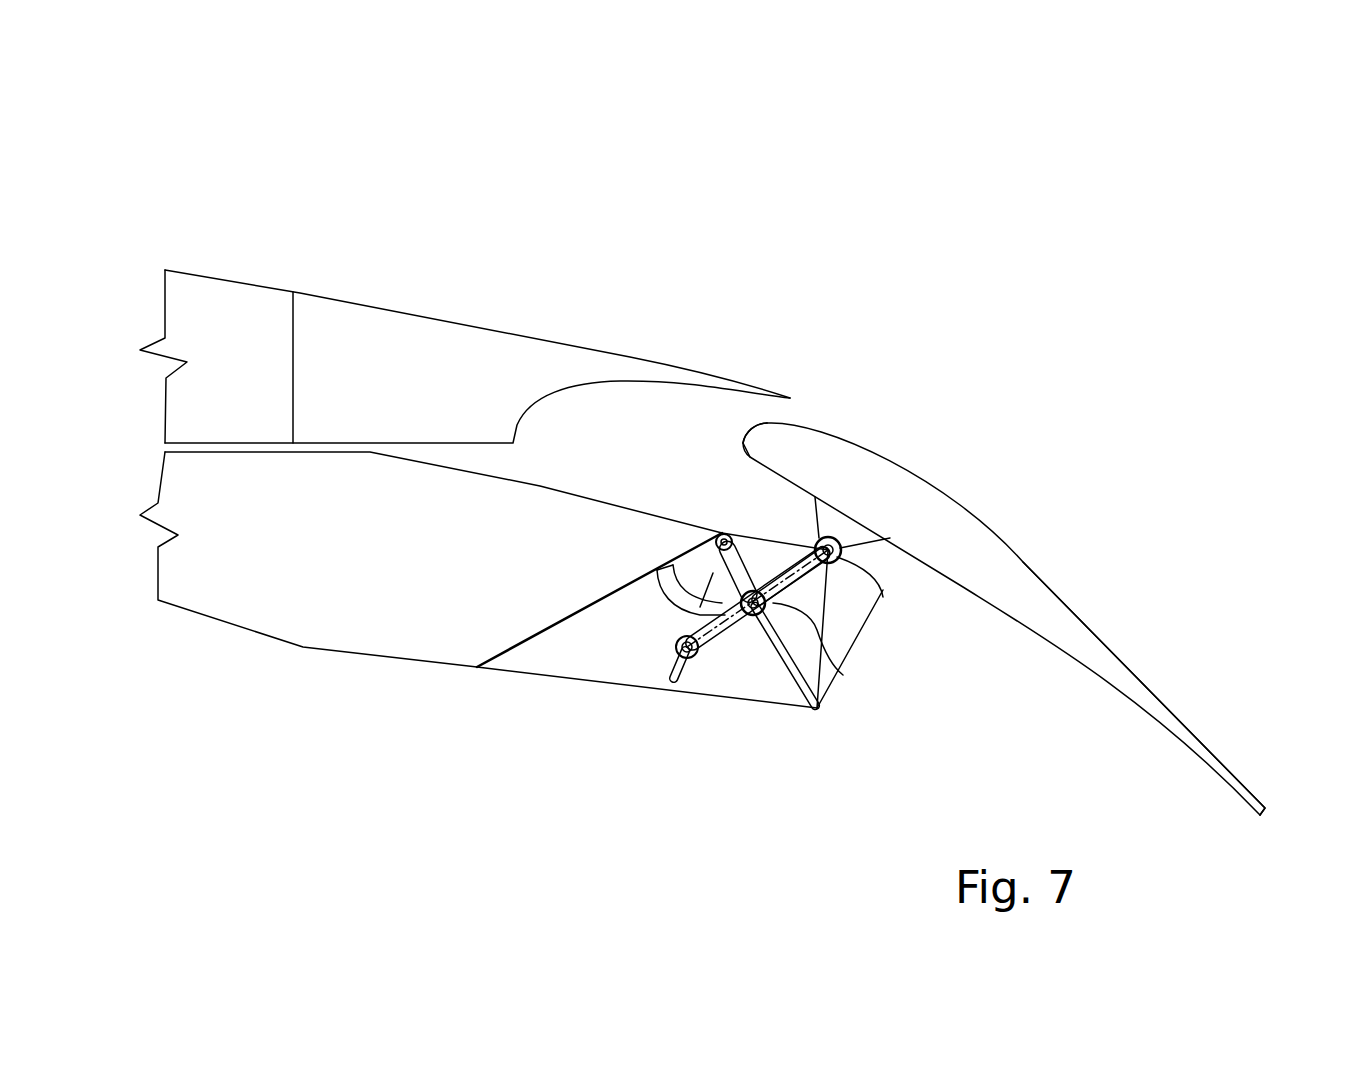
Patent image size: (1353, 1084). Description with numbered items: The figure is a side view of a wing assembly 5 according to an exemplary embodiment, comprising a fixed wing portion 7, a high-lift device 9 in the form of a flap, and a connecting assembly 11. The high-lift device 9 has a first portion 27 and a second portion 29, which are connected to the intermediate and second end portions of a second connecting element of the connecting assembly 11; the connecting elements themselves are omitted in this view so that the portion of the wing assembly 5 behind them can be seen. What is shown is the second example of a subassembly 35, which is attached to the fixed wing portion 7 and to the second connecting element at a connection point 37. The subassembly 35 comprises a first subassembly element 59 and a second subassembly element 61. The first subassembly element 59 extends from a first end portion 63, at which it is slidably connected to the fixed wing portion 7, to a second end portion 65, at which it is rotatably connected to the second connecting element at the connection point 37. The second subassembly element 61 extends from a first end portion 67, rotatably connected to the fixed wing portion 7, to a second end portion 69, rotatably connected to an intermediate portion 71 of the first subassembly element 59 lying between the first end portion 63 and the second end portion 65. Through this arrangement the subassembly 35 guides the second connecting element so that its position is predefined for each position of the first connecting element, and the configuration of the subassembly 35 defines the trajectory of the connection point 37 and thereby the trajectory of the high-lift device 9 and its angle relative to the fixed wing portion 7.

The wing assembly 5 is at (602, 216).
The fixed wing portion 7 is at (562, 347).
The high-lift device 9 is at (875, 483).
The connecting assembly 11 is at (546, 738).
The first portion 27 is at (813, 442).
The second portion 29 is at (1023, 565).
The subassembly 35 is at (649, 788).
The connection point 37 is at (883, 597).
The first subassembly element 59 is at (745, 617).
The second subassembly element 61 is at (773, 548).
The first end portion 63 is at (710, 700).
The second end portion 65 is at (883, 600).
The first end portion 67 is at (737, 535).
The second end portion 69 is at (843, 675).
The intermediate portion 71 is at (768, 612).